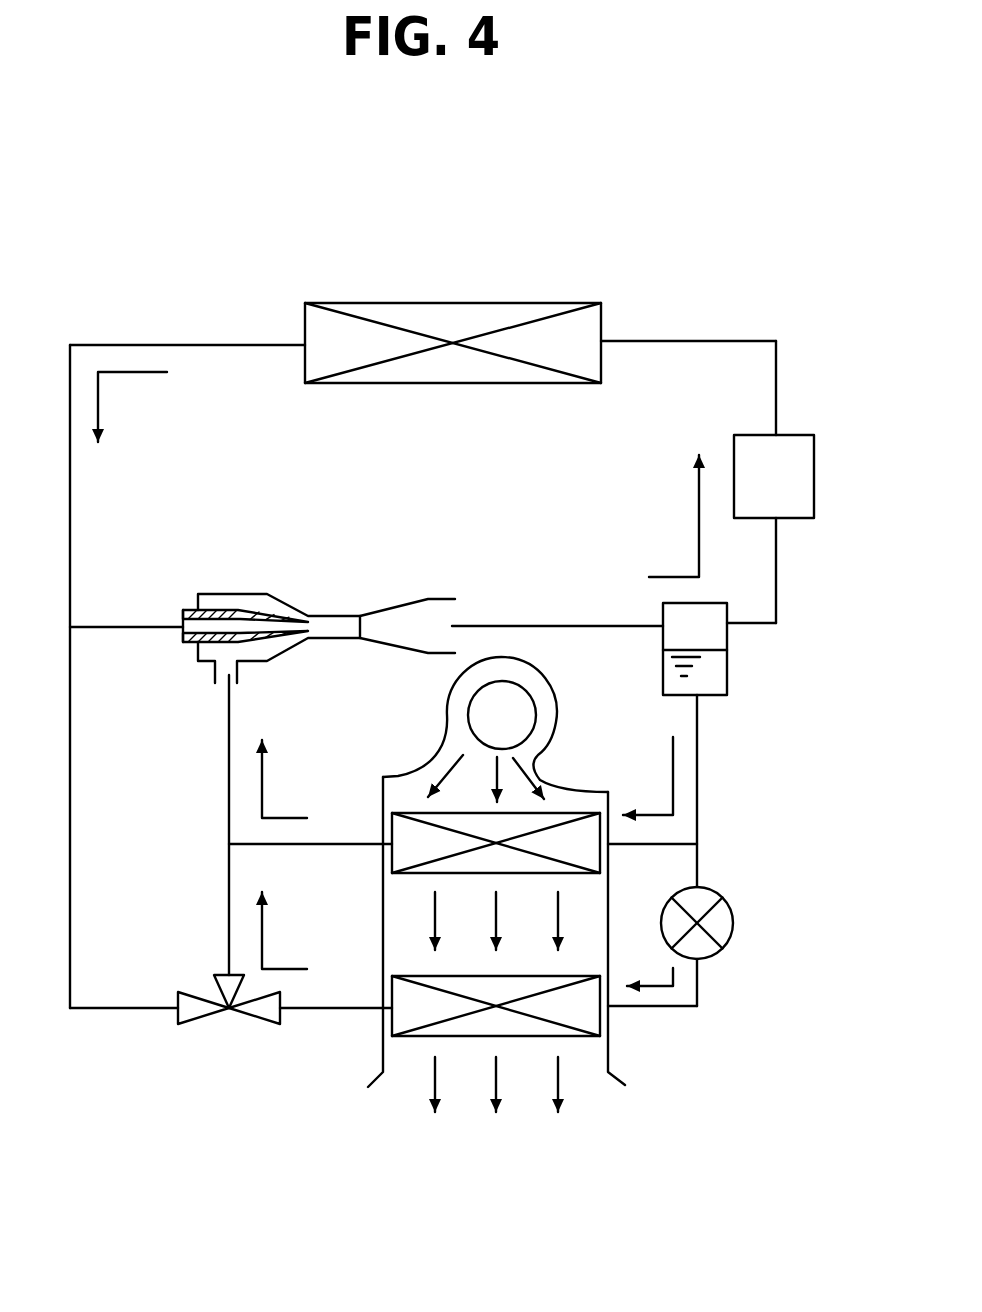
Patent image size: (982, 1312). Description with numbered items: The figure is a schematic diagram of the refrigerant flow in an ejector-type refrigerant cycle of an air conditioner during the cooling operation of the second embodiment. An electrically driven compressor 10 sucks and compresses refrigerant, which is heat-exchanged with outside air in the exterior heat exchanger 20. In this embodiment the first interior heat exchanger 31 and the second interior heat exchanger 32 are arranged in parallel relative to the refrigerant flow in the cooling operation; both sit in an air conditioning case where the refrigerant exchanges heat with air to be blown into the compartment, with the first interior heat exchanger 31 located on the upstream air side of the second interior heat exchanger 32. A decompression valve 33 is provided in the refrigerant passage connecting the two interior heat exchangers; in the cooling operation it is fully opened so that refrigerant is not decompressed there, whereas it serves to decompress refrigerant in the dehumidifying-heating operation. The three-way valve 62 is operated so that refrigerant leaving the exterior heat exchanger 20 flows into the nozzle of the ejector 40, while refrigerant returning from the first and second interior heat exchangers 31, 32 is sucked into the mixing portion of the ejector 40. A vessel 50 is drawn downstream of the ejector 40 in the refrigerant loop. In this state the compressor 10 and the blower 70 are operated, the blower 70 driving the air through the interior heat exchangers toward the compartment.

The compressor 10 is at (817, 474).
The exterior heat exchanger 20 is at (450, 323).
The first interior heat exchanger 31 is at (427, 813).
The second interior heat exchanger 32 is at (427, 976).
The decompression valve 33 is at (720, 927).
The ejector 40 is at (335, 598).
The gas-liquid separator 50 is at (718, 680).
The three-way valve 62 is at (229, 1022).
The blower 70 is at (545, 720).